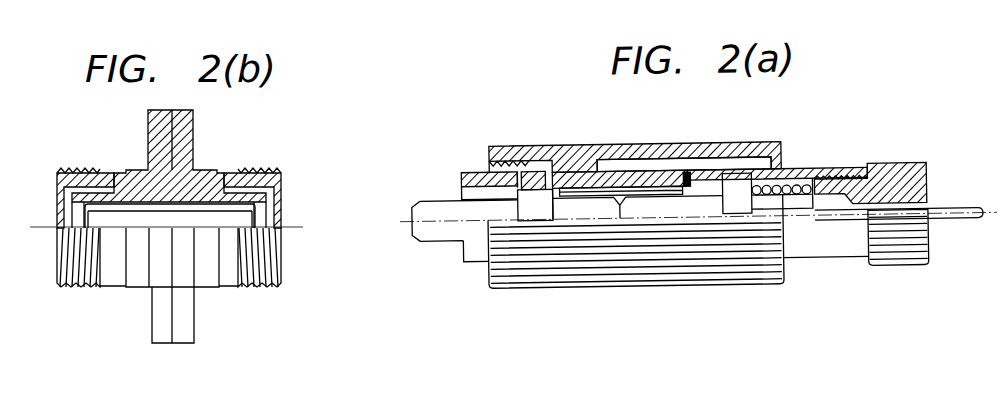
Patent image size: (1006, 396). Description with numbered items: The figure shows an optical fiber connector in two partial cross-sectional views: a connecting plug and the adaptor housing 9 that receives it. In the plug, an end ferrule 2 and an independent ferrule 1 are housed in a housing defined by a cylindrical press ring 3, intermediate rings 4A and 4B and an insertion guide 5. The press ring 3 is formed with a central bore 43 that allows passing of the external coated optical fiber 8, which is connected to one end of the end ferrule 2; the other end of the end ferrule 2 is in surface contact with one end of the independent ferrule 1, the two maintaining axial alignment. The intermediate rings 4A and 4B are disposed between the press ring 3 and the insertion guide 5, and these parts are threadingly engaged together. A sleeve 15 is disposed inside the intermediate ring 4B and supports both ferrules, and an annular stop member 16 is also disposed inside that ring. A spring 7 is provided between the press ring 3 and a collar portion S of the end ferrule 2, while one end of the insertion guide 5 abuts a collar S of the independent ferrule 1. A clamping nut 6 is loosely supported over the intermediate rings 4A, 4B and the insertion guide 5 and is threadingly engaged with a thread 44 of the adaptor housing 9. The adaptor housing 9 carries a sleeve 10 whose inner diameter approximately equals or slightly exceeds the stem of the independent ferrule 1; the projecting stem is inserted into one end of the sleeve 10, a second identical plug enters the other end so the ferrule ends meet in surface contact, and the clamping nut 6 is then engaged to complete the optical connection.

In FIG. 2A, the independent ferrule 1 is at (438, 233).
In FIG. 2A, the end ferrule 2 is at (697, 208).
In FIG. 2A, the cylindrical press ring 3 is at (902, 166).
In FIG. 2A, the intermediate ring 4A is at (793, 170).
In FIG. 2A, the intermediate ring 4B is at (619, 170).
In FIG. 2A, the insertion guide 5 is at (462, 169).
In FIG. 2A, the clamping nut 6 is at (572, 143).
In FIG. 2A, the spring 7 is at (767, 186).
In FIG. 2A, the coated optical fiber 8 is at (942, 212).
In FIG. 2B, the adaptor housing 9 is at (202, 167).
In FIG. 2B, the adaptor sleeve 10 is at (224, 217).
In FIG. 2A, the sleeve 15 is at (583, 196).
In FIG. 2A, the annular stop member 16 is at (686, 158).
In FIG. 2A, the central bore 43 is at (925, 218).
In FIG. 2B, the thread 44 is at (258, 169).
In FIG. 2A, the collar portion S is at (533, 187).